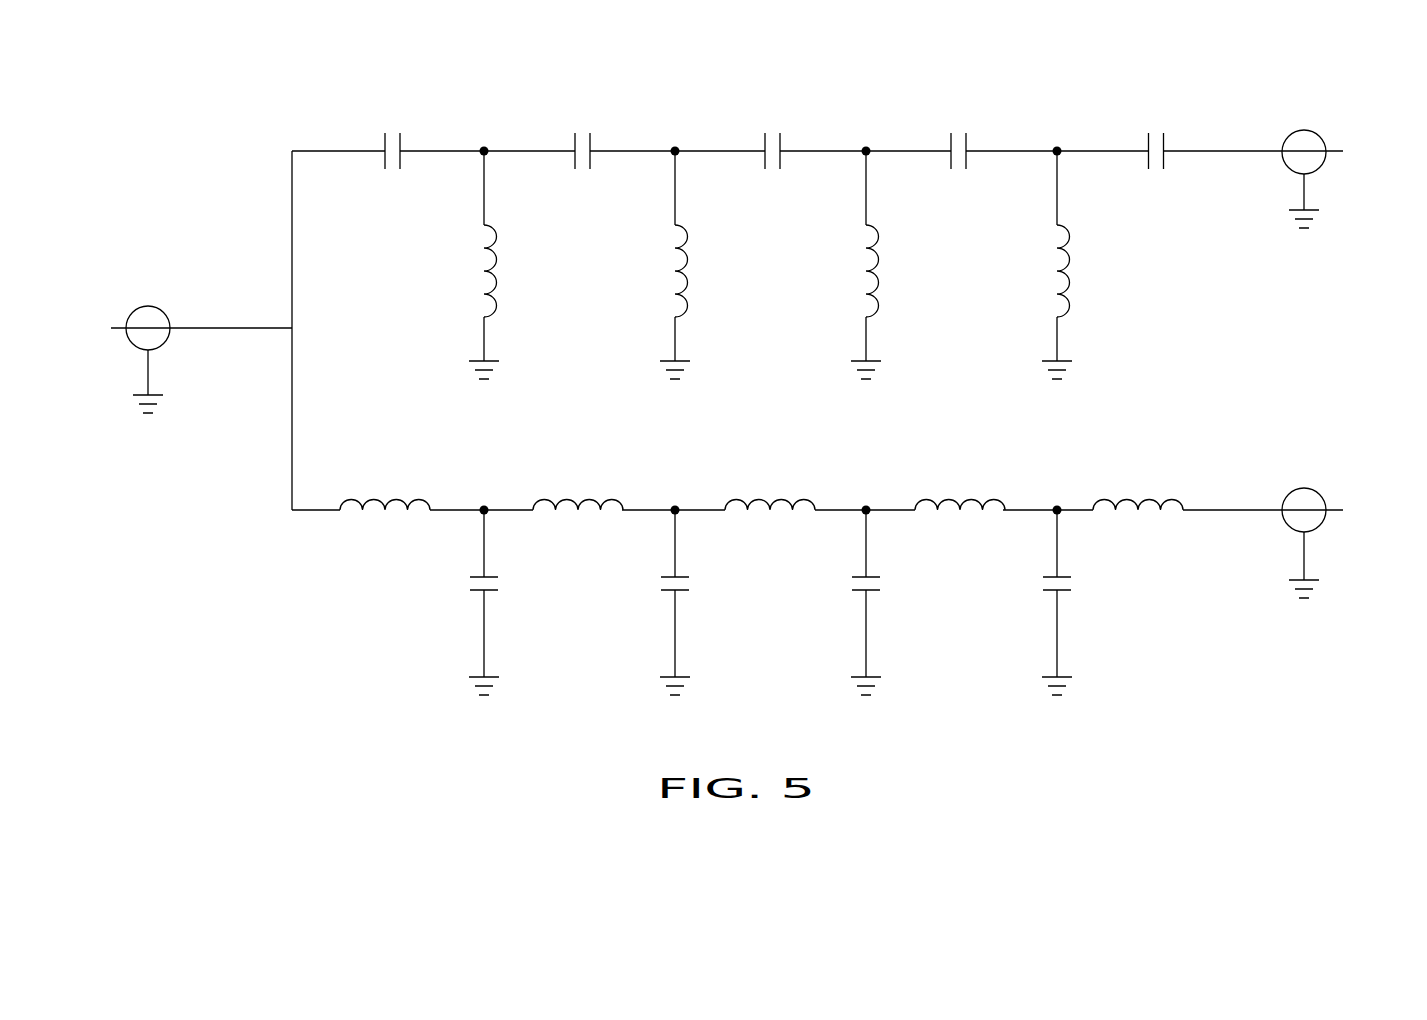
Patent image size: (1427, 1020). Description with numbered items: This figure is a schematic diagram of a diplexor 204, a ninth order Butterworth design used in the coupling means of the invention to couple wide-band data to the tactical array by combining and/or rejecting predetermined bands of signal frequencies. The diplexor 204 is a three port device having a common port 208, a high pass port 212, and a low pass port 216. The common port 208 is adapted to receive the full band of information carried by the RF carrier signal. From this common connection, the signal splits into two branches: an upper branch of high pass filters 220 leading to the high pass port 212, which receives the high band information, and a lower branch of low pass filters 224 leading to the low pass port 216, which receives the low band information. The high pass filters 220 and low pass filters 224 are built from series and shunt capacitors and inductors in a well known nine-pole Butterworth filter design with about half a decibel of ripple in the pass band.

The diplexor 204 is at (842, 347).
The common port 208 is at (201, 333).
The high pass port 212 is at (1327, 142).
The low pass port 216 is at (1347, 509).
The high pass filters 220 is at (814, 173).
The low pass filters 224 is at (813, 533).